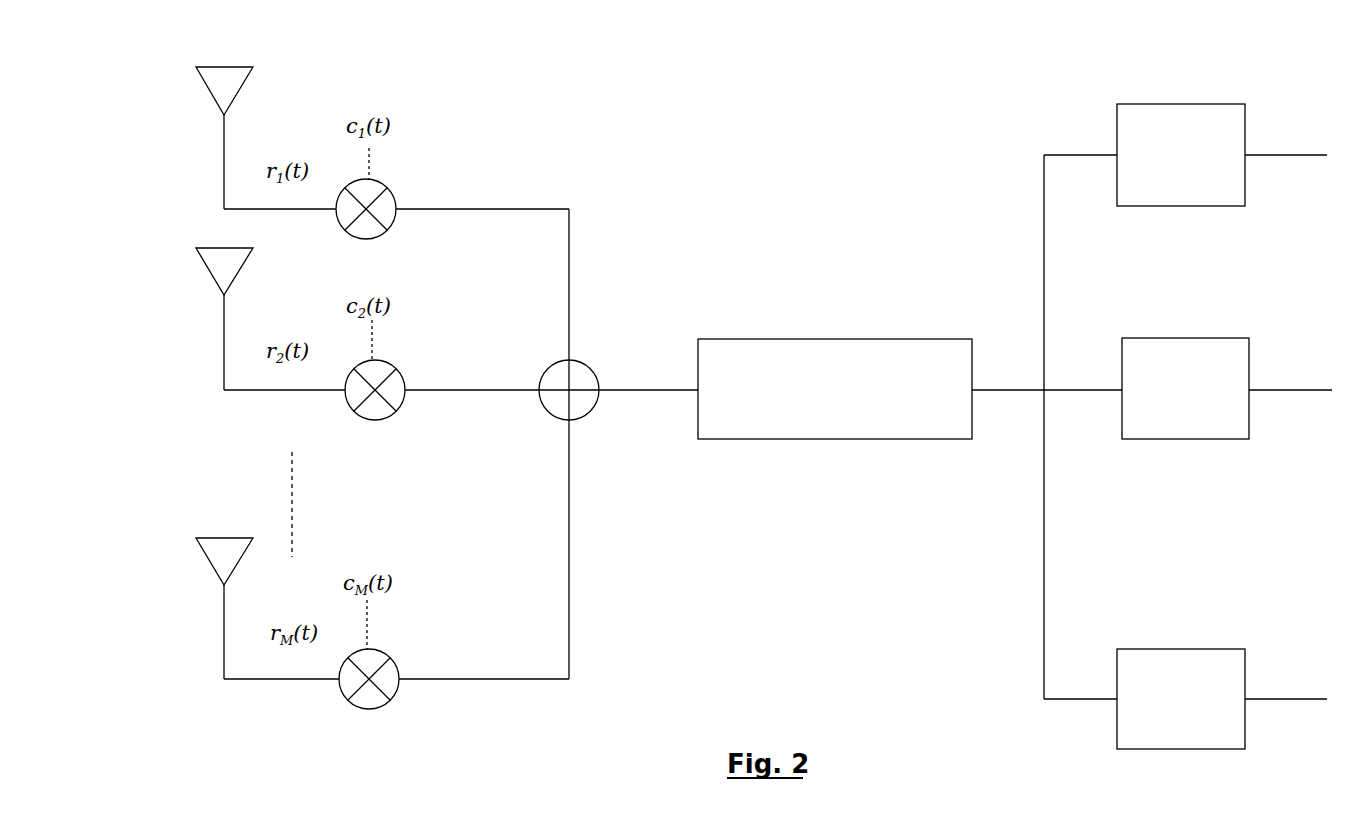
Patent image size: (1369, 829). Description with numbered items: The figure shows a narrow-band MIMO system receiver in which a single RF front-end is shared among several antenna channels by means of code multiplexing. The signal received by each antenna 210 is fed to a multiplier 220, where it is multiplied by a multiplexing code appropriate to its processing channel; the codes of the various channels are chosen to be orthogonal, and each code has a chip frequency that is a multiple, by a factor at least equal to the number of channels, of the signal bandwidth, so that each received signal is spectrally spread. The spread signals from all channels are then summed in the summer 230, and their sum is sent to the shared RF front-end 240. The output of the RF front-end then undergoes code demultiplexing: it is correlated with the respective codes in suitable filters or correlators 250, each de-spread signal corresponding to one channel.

The antenna 210 is at (213, 70).
The multiplier 220 is at (395, 189).
The summer 230 is at (593, 367).
The shared RF front-end 240 is at (830, 339).
The filter (correlator) 250 is at (1205, 104).